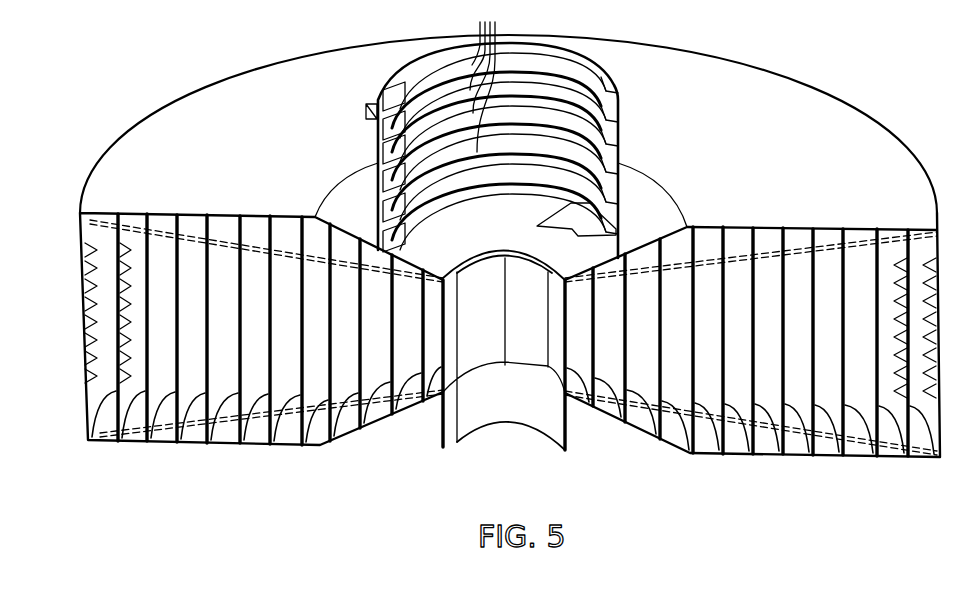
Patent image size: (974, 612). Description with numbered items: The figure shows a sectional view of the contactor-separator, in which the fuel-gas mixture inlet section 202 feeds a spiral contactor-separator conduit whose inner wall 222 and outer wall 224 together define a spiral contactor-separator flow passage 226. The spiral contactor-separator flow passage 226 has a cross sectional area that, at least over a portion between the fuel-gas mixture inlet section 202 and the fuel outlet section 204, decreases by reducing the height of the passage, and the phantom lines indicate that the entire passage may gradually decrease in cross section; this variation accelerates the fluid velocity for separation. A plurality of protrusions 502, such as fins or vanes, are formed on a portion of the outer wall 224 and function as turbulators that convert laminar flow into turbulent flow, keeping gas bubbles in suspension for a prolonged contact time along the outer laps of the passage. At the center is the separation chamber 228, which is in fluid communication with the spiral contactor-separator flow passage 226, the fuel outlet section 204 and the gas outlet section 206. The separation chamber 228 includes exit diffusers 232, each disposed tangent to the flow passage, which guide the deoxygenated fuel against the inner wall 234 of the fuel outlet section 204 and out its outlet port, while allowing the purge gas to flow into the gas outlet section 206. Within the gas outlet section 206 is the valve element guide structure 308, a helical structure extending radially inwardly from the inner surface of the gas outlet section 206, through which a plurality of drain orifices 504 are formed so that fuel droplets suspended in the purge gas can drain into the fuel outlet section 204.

The fuel-gas mixture inlet section 202 is at (264, 67).
The fuel outlet section 204 is at (443, 441).
The gas outlet section 206 is at (621, 116).
The inner wall 222 is at (100, 434).
The outer wall 224 is at (90, 394).
The spiral contactor-separator flow passage 226 is at (128, 232).
The separation chamber 228 is at (522, 328).
The exit diffusers 232 is at (458, 270).
The inner wall of the fuel outlet section 234 is at (480, 408).
The valve element guide structure 308 is at (542, 62).
The protrusions 502 is at (88, 242).
The drain orifices 504 is at (323, 183).